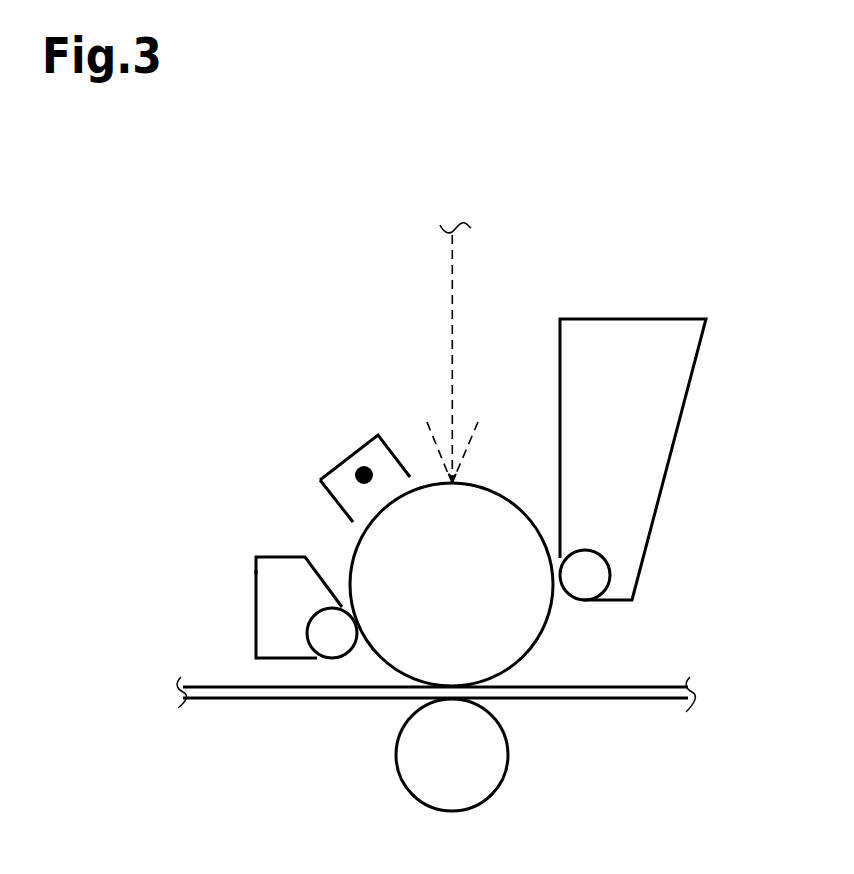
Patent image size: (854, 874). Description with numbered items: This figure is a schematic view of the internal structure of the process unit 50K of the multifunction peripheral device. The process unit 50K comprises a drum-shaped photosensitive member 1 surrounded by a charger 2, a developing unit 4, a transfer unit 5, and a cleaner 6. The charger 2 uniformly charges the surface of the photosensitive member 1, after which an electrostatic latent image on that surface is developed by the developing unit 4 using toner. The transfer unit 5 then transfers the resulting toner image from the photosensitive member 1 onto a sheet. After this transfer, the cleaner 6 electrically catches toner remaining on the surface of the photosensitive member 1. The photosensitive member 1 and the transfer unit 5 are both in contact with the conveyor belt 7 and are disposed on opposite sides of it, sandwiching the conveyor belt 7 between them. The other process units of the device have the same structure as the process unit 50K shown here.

The photosensitive member 1 is at (457, 601).
The charger 2 is at (364, 439).
The developing unit 4 is at (677, 425).
The transfer unit 5 is at (502, 778).
The cleaner 6 is at (256, 576).
The conveyor belt 7 is at (232, 692).
The process unit 50K is at (264, 427).